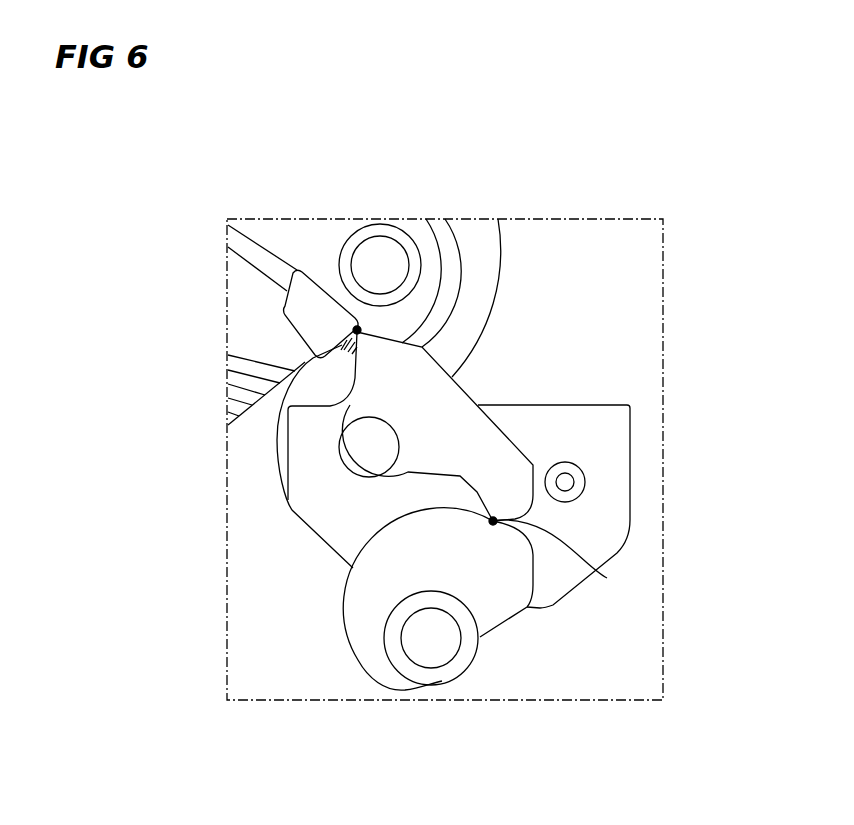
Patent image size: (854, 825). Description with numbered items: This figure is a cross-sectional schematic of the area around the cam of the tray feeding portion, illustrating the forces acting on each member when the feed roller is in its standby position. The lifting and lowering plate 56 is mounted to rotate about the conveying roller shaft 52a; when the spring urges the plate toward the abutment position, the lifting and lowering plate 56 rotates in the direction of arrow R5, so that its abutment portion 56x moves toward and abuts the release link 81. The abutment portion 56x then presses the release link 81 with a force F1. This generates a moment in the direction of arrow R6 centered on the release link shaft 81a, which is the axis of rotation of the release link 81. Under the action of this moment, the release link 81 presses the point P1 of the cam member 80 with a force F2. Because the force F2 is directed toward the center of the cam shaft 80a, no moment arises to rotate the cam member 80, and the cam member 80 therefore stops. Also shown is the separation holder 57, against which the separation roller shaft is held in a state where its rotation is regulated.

The conveying roller shaft 52a is at (383, 247).
The lifting and lowering plate 56 is at (477, 240).
The abutment portion 56x is at (307, 287).
The release link 81 is at (371, 450).
The release link shaft 81a is at (353, 450).
The separation holder 57 is at (617, 460).
The cam member 80 is at (435, 641).
The cam shaft 80a is at (447, 657).
The point P1 is at (607, 578).
The force F1 is at (357, 330).
The force F2 is at (493, 521).
The arrow direction R5 is at (273, 182).
The arrow direction R6 is at (368, 395).